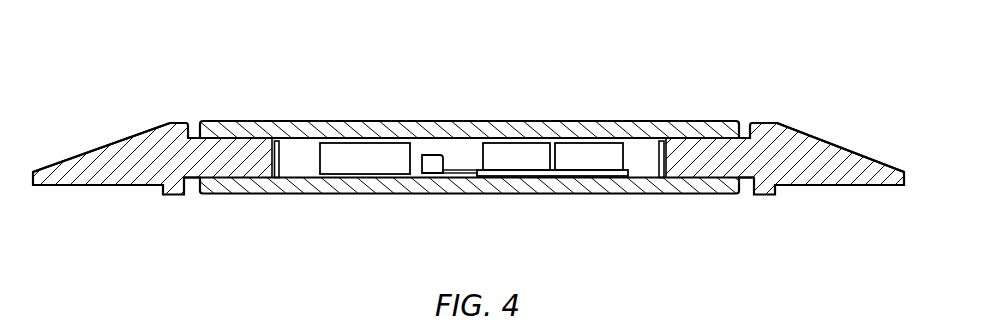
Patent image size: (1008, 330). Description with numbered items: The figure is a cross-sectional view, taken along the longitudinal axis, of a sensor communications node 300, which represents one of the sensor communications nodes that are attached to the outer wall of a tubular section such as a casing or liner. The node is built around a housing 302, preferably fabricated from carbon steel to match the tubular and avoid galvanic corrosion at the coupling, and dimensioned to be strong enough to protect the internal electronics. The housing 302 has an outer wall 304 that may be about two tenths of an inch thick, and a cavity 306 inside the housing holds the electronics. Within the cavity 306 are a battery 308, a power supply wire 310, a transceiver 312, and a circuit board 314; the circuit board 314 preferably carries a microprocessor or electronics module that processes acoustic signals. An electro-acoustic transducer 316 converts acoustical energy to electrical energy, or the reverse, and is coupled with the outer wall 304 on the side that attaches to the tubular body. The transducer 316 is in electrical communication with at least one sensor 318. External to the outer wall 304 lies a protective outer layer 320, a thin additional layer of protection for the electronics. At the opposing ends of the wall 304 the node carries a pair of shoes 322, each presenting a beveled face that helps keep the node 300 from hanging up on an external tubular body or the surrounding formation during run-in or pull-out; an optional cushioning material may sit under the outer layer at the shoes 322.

The sensor communications node 300 is at (777, 73).
The housing 302 is at (635, 195).
The outer wall 304 is at (622, 130).
The cavity 306 is at (300, 178).
The battery 308 is at (357, 147).
The power supply wire 310 is at (442, 155).
The transceiver 312 is at (590, 150).
The circuit board 314 is at (562, 178).
The electro-acoustic transducer 316 is at (517, 150).
The sensor 318 is at (433, 170).
The protective outer layer 320 is at (140, 133).
The shoe 322 is at (88, 152).